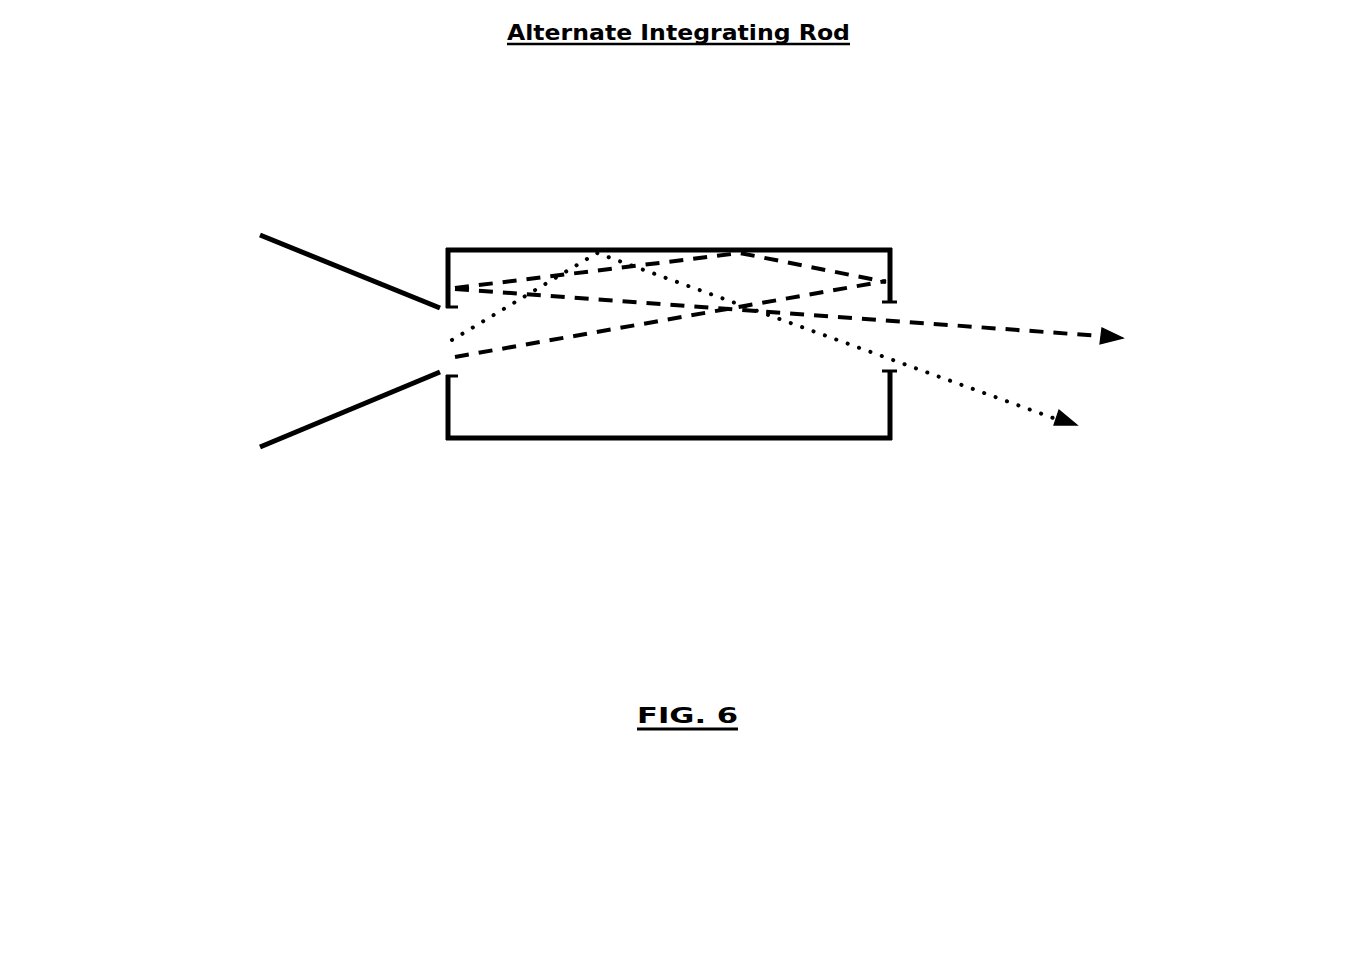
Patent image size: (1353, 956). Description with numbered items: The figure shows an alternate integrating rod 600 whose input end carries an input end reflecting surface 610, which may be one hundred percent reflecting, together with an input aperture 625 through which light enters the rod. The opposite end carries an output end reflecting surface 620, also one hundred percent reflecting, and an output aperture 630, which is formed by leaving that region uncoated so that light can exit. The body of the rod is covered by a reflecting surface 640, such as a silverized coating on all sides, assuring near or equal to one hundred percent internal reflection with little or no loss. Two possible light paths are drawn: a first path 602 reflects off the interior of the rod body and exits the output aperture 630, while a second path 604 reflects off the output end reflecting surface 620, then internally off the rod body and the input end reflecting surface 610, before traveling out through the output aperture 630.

The alternate integrating rod 600 is at (548, 583).
The input end reflecting surface 610 is at (438, 412).
The output end reflecting surface 620 is at (908, 399).
The input aperture 625 is at (428, 343).
The output aperture 630 is at (899, 331).
The reflecting surface 640 is at (682, 443).
The second path 604 is at (789, 332).
The first path 602 is at (764, 358).